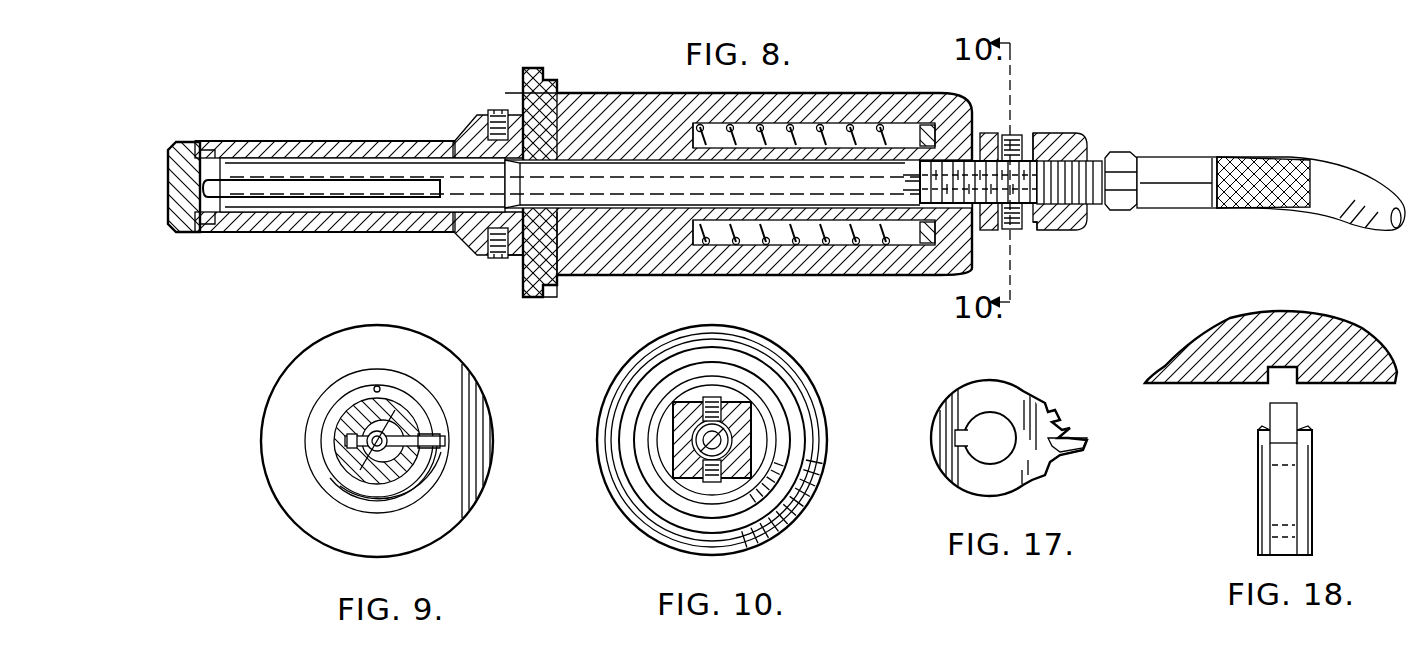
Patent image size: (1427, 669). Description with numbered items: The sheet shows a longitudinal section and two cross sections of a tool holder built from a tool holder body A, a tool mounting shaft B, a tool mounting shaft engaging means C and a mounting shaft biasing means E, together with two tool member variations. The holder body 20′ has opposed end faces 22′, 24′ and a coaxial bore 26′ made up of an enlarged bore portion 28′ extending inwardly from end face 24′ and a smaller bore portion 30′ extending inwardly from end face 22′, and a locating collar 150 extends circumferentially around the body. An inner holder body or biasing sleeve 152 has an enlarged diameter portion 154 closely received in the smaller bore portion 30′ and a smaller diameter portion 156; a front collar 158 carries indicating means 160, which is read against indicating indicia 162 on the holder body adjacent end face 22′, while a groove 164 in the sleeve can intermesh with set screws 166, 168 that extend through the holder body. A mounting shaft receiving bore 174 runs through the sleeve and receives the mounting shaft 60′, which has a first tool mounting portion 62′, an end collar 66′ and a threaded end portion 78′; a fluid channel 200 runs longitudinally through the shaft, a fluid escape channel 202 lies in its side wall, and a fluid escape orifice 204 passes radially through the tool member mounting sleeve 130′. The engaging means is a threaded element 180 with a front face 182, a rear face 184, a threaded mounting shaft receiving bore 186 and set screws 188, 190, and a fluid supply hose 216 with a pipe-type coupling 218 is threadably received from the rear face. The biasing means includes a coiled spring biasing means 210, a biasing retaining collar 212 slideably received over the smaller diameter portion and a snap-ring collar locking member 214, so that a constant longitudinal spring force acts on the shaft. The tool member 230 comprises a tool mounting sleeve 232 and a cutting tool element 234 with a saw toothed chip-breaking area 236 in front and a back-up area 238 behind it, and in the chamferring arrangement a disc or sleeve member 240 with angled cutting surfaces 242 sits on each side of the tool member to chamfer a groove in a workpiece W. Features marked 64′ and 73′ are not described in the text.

In FIG. 8, the holder body 20′ is at (692, 100).
In FIG. 9, the holder body 20′ is at (462, 392).
In FIG. 10, the holder body 20′ is at (822, 400).
In FIG. 8, the end face 22′ is at (455, 145).
In FIG. 8, the end face 24′ is at (976, 252).
In FIG. 8, the coaxial bore 26′ is at (672, 252).
In FIG. 8, the enlarged bore portion 28′ is at (725, 242).
In FIG. 8, the smaller bore portion 30′ is at (592, 262).
In FIG. 8, the mounting shaft 60′ is at (608, 160).
In FIG. 8, the first tool mounting portion 62′ is at (352, 170).
In FIG. 8, the tube wall 64′ is at (825, 206).
In FIG. 8, the end collar 66′ is at (170, 162).
In FIG. 17, the keyway 73′ is at (962, 440).
In FIG. 8, the threaded end portion 78′ is at (1020, 165).
In FIG. 10, the threaded end portion 78′ is at (722, 440).
In FIG. 9, the tool member mounting sleeve 130′ is at (332, 438).
In FIG. 8, the locating collar 150 is at (538, 68).
In FIG. 8, the biasing sleeve 152 is at (512, 254).
In FIG. 8, the enlarged diameter portion 154 is at (560, 288).
In FIG. 8, the smaller diameter portion 156 is at (778, 242).
In FIG. 8, the front collar 158 is at (448, 226).
In FIG. 9, the indicating means 160 is at (370, 386).
In FIG. 9, the indicating indicia 162 is at (400, 372).
In FIG. 8, the groove 164 is at (470, 126).
In FIG. 8, the set screw 166 is at (497, 110).
In FIG. 8, the set screw 168 is at (497, 258).
In FIG. 8, the mounting shaft receiving bore 174 is at (648, 210).
In FIG. 8, the threaded element 180 is at (1040, 230).
In FIG. 10, the threaded element 180 is at (686, 452).
In FIG. 8, the front face 182 is at (988, 133).
In FIG. 8, the rear face 184 is at (1085, 140).
In FIG. 8, the threaded mounting shaft receiving bore 186 is at (1046, 192).
In FIG. 8, the set screw 188 is at (1012, 135).
In FIG. 10, the set screw 188 is at (716, 402).
In FIG. 8, the set screw 190 is at (1012, 229).
In FIG. 10, the set screw 190 is at (716, 482).
In FIG. 8, the fluid channel 200 is at (420, 175).
In FIG. 9, the fluid channel 200 is at (342, 470).
In FIG. 10, the fluid channel 200 is at (700, 438).
In FIG. 8, the fluid escape channel 202 is at (250, 182).
In FIG. 9, the fluid escape channel 202 is at (362, 490).
In FIG. 9, the fluid escape orifice 204 is at (446, 441).
In FIG. 8, the coiled spring biasing means 210 is at (795, 130).
In FIG. 8, the biasing retaining collar 212 is at (926, 125).
In FIG. 8, the collar locking member 214 is at (930, 243).
In FIG. 8, the fluid supply hose 216 is at (1250, 158).
In FIG. 8, the pipe-type coupling 218 is at (1125, 155).
In FIG. 17, the tool member 230 is at (1037, 388).
In FIG. 18, the tool member 230 is at (1285, 508).
In FIG. 17, the tool mounting sleeve 232 is at (972, 392).
In FIG. 17, the cutting tool element 234 is at (1082, 447).
In FIG. 17, the chip-breaking area 236 is at (1048, 405).
In FIG. 17, the back-up area 238 is at (1050, 462).
In FIG. 18, the disc or sleeve member 240 is at (1262, 500).
In FIG. 18, the cutting surfaces 242 is at (1264, 434).
In FIG. 8, the tool holder body A is at (606, 92).
In FIG. 8, the tool mounting shaft B is at (158, 204).
In FIG. 8, the tool mounting shaft engaging means C is at (1092, 128).
In FIG. 8, the mounting shaft biasing means E is at (848, 118).
In FIG. 18, the workpiece W is at (1393, 364).